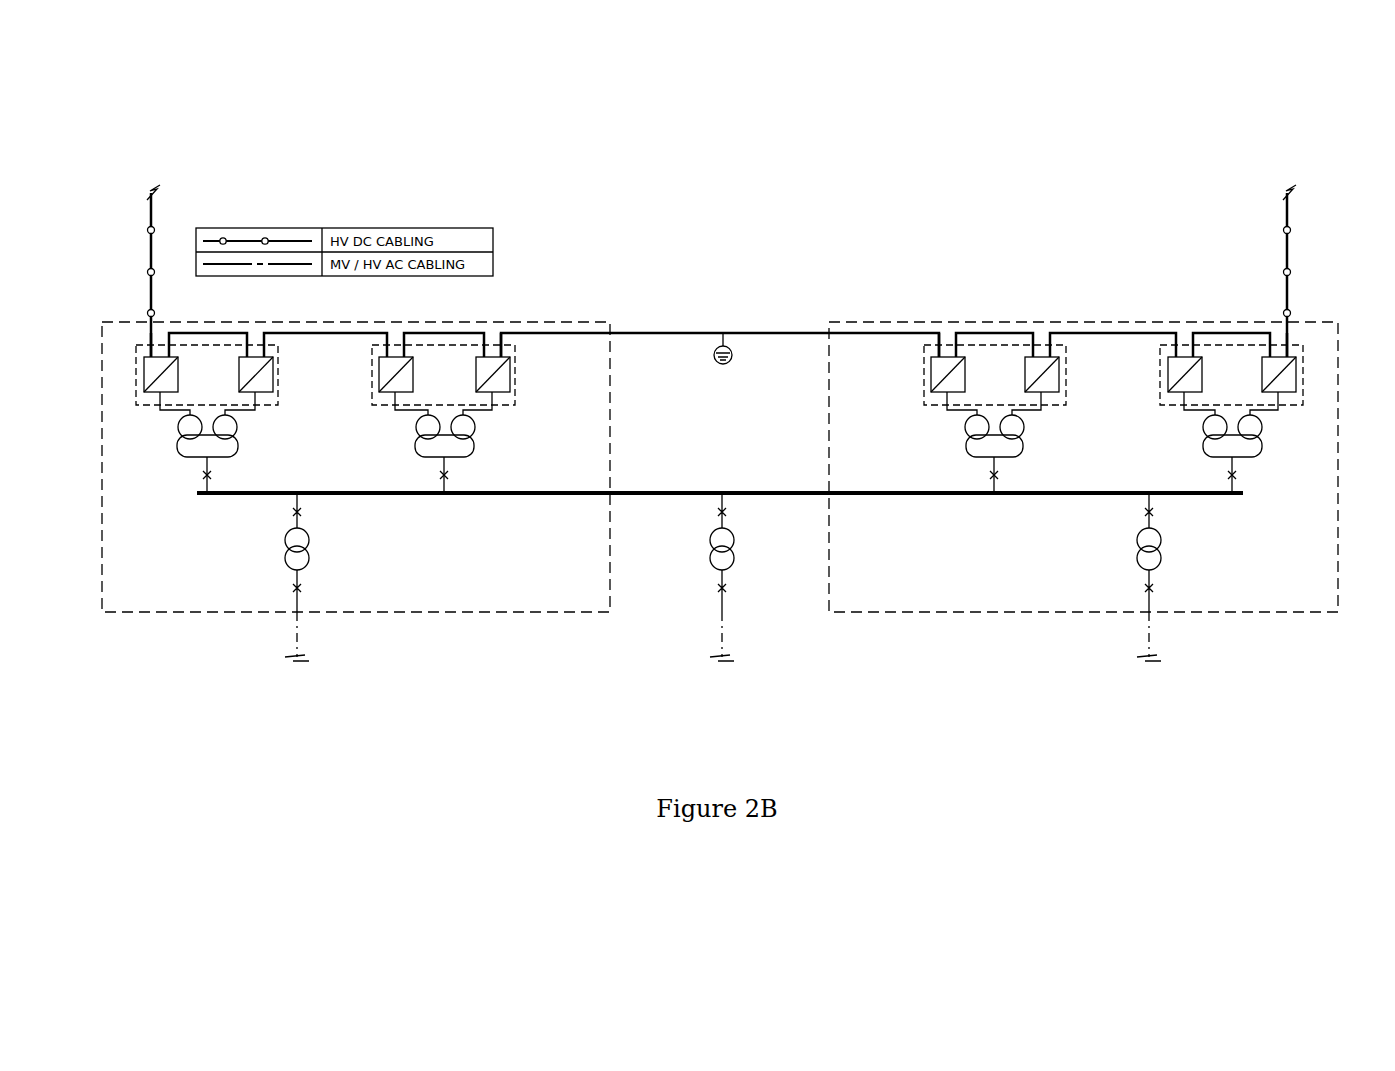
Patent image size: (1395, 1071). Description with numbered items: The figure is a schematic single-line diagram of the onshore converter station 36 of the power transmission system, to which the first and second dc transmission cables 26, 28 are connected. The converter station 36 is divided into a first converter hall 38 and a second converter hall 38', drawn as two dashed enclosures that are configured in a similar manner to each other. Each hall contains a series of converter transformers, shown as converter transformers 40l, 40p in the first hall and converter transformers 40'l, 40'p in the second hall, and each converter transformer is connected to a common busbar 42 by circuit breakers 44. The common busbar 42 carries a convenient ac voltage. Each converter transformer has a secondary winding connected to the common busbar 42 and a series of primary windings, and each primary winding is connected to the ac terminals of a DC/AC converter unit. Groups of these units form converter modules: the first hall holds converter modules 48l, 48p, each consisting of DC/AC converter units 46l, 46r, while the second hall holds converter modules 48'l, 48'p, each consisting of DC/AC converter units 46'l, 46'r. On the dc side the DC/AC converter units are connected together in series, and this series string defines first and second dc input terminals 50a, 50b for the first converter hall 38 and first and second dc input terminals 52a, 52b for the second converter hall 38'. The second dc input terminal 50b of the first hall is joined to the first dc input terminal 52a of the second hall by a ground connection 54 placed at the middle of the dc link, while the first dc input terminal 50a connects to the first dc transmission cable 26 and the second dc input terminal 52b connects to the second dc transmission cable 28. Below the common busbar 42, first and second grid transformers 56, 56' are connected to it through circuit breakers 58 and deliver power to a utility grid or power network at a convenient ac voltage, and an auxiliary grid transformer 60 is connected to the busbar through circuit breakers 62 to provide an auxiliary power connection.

The first dc transmission cable 26 is at (151, 250).
The second dc transmission cable 28 is at (1287, 248).
The onshore converter station 36 is at (965, 720).
The first converter hall 38 is at (356, 522).
The second converter hall 38' is at (1083, 402).
The converter transformer 40l is at (168, 458).
The converter transformer 40p is at (483, 443).
The converter transformer 40'l is at (1024, 481).
The converter transformer 40'p is at (1295, 454).
The common busbar 42 is at (665, 494).
The circuit breakers 44 is at (188, 478).
The DC/AC converter unit 46l is at (144, 372).
The DC/AC converter unit 46r is at (273, 388).
The DC/AC converter unit 46'l is at (1028, 408).
The DC/AC converter unit 46'r is at (1173, 408).
The converter module 48l is at (231, 346).
The converter module 48p is at (447, 347).
The converter module 48'l is at (995, 338).
The converter module 48'p is at (1231, 335).
The first dc input terminal 50a is at (140, 349).
The second dc input terminal 50b is at (515, 349).
The first dc input terminal 52a is at (937, 332).
The second dc input terminal 52b is at (1306, 345).
The ground connection 54 is at (722, 318).
The first grid transformer 56 is at (267, 609).
The second grid transformer 56' is at (1167, 609).
The circuit breakers 58 is at (311, 512).
The auxiliary grid transformer 60 is at (755, 552).
The circuit breakers 62 is at (741, 512).